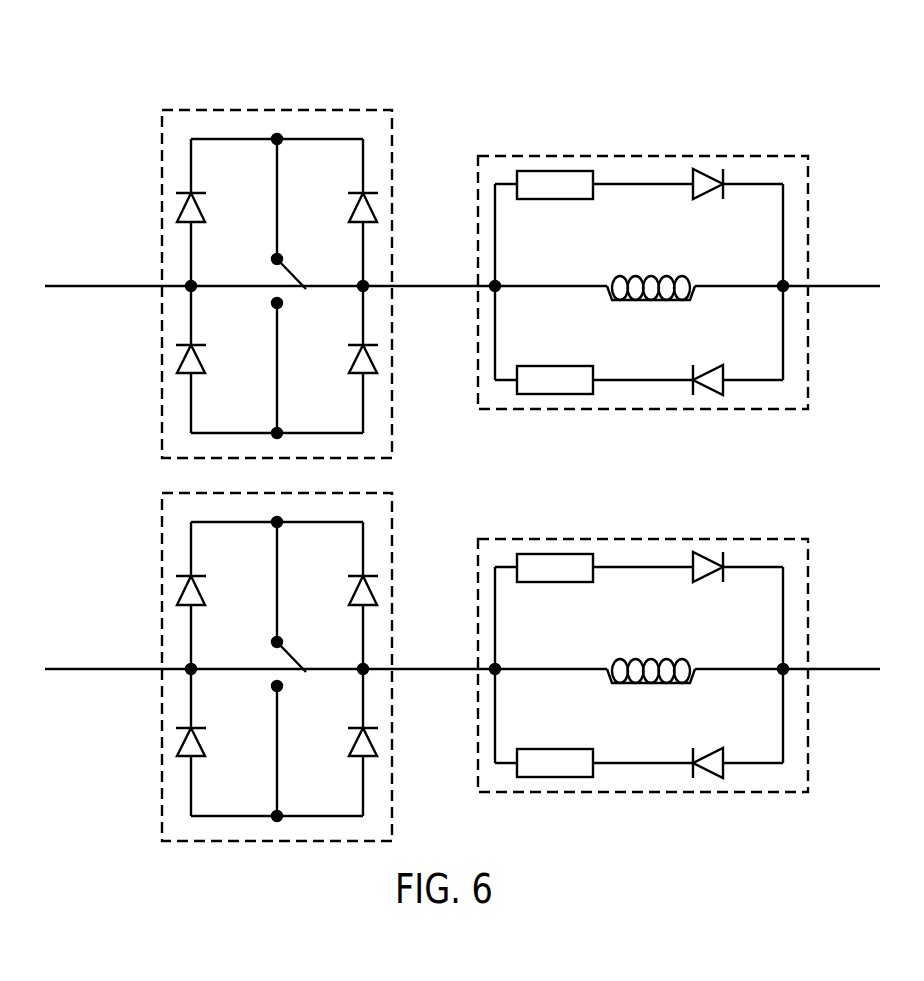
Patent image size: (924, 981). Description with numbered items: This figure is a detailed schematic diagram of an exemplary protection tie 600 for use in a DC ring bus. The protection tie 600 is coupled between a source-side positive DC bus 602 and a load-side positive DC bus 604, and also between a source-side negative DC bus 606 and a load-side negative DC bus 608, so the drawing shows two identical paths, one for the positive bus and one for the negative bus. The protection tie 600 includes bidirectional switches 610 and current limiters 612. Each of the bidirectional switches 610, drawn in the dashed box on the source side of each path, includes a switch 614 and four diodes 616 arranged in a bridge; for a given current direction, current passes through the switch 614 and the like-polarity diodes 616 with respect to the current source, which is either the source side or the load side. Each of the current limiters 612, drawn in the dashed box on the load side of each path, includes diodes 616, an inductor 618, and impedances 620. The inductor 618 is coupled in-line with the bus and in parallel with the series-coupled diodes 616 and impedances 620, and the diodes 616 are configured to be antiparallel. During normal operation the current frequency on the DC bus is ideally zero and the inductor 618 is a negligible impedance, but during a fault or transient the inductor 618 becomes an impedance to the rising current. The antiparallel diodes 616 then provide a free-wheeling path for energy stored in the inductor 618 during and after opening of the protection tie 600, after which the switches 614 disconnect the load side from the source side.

The protection tie 600 is at (598, 89).
The source-side positive DC bus 602 is at (62, 290).
The load-side positive DC bus 604 is at (873, 290).
The source-side negative DC bus 606 is at (62, 673).
The load-side negative DC bus 608 is at (873, 673).
The bidirectional switch 610 is at (160, 432).
The current limiter 612 is at (808, 189).
The switch 614 is at (296, 283).
The diode 616 is at (416, 472).
The inductor 618 is at (652, 275).
The impedance 620 is at (555, 473).